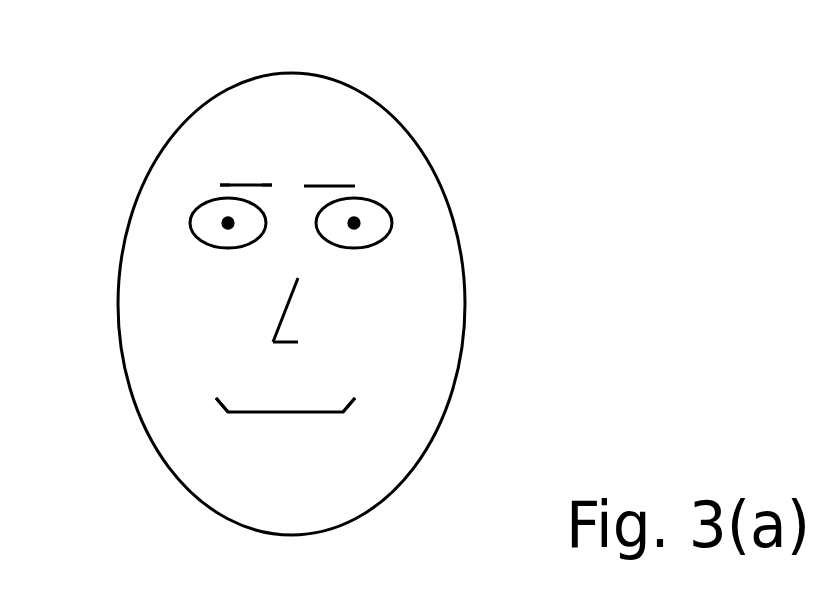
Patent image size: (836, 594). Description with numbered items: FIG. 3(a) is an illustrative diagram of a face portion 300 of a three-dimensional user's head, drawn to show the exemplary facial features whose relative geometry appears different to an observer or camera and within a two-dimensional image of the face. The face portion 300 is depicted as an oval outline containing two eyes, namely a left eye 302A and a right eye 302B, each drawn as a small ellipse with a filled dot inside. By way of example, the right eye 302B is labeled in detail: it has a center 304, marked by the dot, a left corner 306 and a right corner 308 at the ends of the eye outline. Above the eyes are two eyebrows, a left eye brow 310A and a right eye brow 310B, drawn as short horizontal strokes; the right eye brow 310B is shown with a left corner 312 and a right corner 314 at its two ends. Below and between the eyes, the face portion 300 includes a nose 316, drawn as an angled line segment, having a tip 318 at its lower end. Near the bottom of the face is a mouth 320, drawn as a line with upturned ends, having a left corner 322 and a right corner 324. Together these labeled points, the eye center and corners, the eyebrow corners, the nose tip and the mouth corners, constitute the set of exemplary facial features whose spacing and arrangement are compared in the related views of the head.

The face portion 300 is at (453, 62).
The left eye 302A is at (382, 215).
The right eye 302B is at (210, 207).
The center 304 is at (221, 221).
The left corner 306 is at (264, 227).
The right corner 308 is at (191, 223).
The left eye brow 310A is at (338, 177).
The right eye brow 310B is at (218, 182).
The left corner 312 is at (270, 182).
The right corner 314 is at (242, 175).
The nose 316 is at (272, 312).
The tip 318 is at (270, 342).
The mouth 320 is at (283, 417).
The left corner 322 is at (355, 398).
The right corner 324 is at (217, 398).